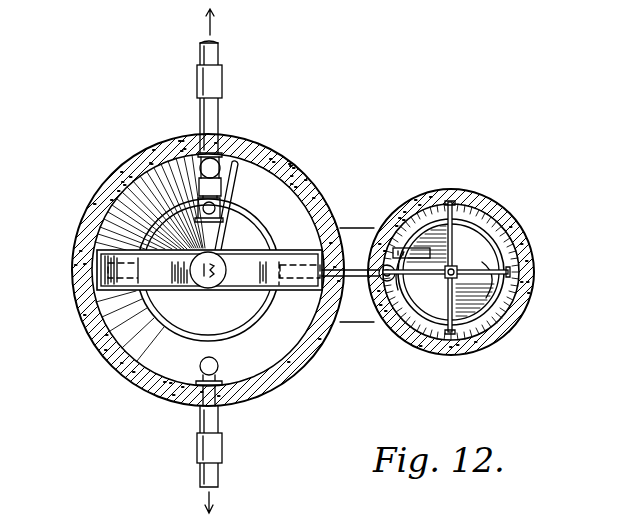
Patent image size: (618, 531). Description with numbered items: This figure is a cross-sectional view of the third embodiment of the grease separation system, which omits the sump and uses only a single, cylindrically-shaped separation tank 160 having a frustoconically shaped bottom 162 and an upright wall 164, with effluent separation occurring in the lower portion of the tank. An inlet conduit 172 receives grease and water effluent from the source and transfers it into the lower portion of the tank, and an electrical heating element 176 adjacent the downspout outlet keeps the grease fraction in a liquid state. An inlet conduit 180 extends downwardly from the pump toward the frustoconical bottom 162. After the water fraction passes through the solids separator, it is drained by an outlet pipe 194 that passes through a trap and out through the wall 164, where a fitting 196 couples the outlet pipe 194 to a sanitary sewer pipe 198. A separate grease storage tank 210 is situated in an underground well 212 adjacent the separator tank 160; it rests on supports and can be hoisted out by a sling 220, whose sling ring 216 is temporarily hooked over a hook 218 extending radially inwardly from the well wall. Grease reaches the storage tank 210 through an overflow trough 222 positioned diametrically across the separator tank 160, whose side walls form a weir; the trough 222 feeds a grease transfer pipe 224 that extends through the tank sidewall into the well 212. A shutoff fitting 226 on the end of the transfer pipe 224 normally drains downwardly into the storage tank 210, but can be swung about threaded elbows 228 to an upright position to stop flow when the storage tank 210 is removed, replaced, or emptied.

The separation tank 160 is at (62, 281).
The frustoconically shaped bottom 162 is at (263, 357).
The upright wall 164 is at (263, 393).
The inlet conduit 172 is at (200, 473).
The electrical heating element 176 is at (167, 335).
The inlet conduit 180 is at (276, 152).
The outlet pipe 194 is at (198, 202).
The fitting 196 is at (222, 84).
The sanitary sewer pipe 198 is at (219, 58).
The grease storage tank 210 is at (500, 258).
The underground well 212 is at (508, 328).
The sling ring 216 is at (448, 279).
The hook 218 is at (453, 242).
The sling 220 is at (492, 297).
The overflow trough 222 is at (167, 273).
The grease transfer pipe 224 is at (378, 266).
The shutoff fitting 226 is at (400, 234).
The threaded elbows 228 is at (382, 324).